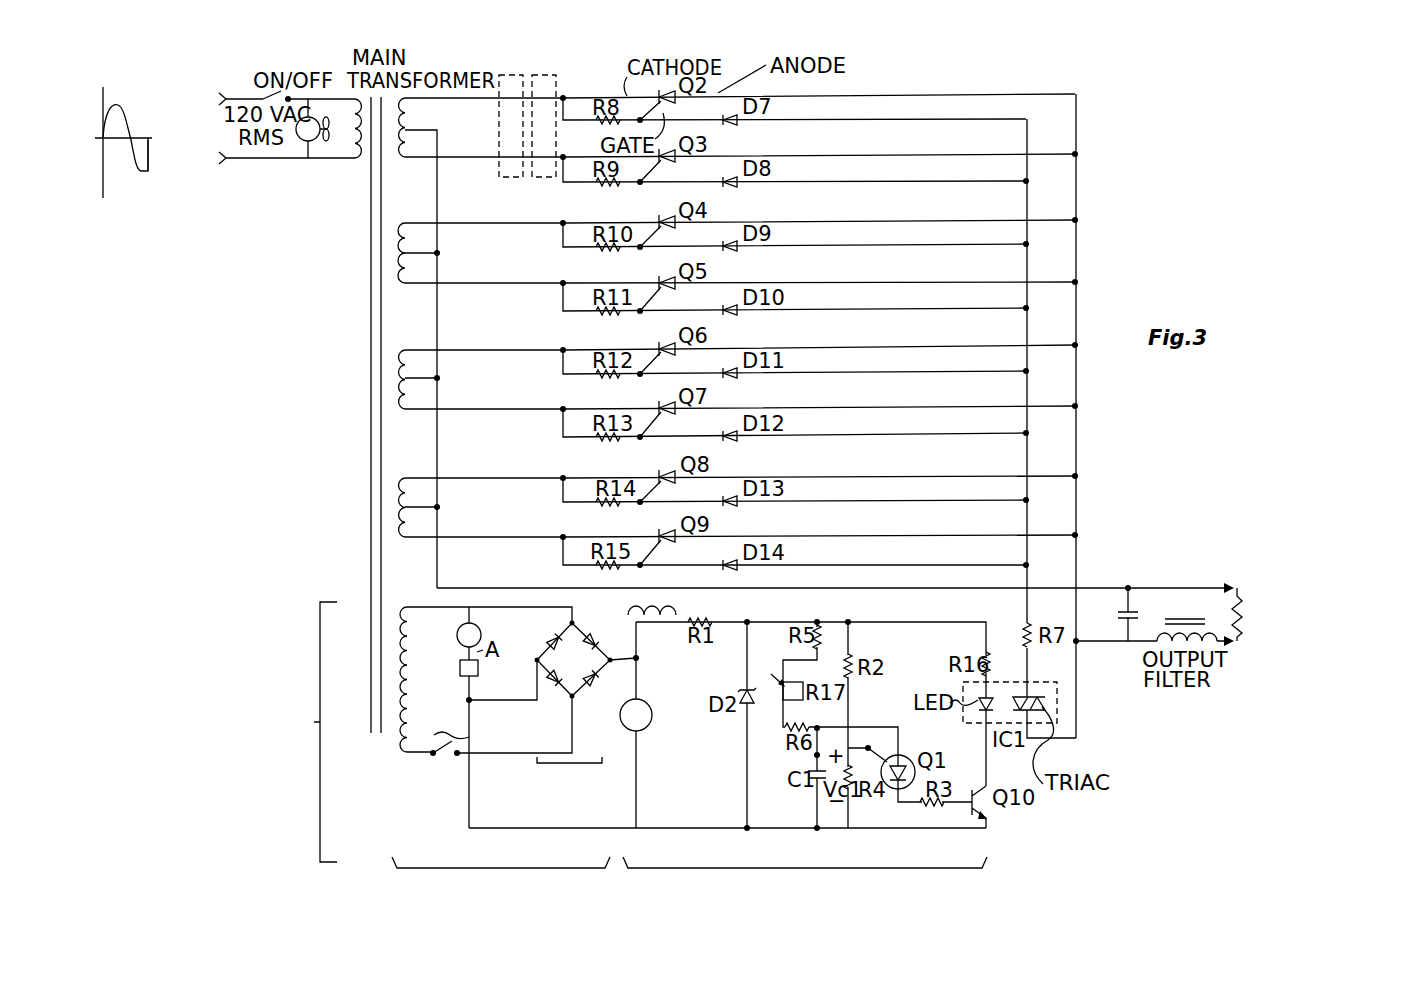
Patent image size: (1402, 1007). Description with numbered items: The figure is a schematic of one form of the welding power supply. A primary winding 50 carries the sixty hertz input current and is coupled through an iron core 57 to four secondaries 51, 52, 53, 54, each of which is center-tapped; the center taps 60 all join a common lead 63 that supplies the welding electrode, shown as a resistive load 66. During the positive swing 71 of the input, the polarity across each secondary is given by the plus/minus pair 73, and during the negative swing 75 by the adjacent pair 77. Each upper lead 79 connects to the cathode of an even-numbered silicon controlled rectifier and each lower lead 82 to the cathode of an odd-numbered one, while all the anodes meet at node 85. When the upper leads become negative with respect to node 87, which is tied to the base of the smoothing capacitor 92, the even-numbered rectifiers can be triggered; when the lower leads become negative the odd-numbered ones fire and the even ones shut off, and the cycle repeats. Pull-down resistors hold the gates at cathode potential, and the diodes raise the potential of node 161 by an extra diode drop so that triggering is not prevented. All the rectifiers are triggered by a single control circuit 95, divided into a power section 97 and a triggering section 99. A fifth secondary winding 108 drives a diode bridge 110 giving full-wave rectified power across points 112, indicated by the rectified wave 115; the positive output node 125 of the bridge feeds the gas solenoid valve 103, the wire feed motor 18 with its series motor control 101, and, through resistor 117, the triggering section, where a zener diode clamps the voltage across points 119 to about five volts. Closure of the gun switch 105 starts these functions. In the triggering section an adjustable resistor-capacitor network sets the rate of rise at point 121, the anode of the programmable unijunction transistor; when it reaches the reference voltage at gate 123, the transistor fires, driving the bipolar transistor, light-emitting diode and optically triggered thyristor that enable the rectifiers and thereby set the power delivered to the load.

The wire feed motor 18 is at (458, 628).
The primary winding 50 is at (352, 163).
The secondary winding 51 is at (412, 178).
The secondary winding 52 is at (400, 213).
The secondary winding 53 is at (424, 430).
The secondary winding 54 is at (404, 466).
The iron core 57 is at (366, 462).
The center taps 60 is at (428, 128).
The common lead 63 is at (452, 588).
The resistive load 66 is at (1240, 610).
The positive swing 71 is at (129, 107).
The pair of plus/minus signs 73 is at (515, 75).
The negative swing 75 is at (146, 172).
The pair of plus/minus signs 77 is at (553, 75).
The upper lead 79 is at (503, 75).
The lower lead 82 is at (488, 158).
The node 85 is at (1077, 257).
The node 87 is at (1128, 643).
The smoothing capacitor 92 is at (1133, 610).
The control circuit 95 is at (314, 722).
The power section 97 is at (493, 870).
The triggering section 99 is at (796, 870).
The motor control 101 is at (478, 668).
The solenoid valve 103 is at (628, 722).
The switch 105 is at (445, 800).
The fifth secondary winding 108 is at (400, 748).
The diode bridge 110 is at (557, 764).
The points 112(+) and 112(-) 112 is at (607, 697).
The rectified wave 115 is at (628, 612).
The resistor 117 is at (713, 621).
The points 119(+) and 119(-) 119 is at (772, 621).
The point 121 is at (815, 756).
The gate 123 is at (868, 748).
The positive node 125 is at (657, 650).
The node 161 is at (1032, 565).